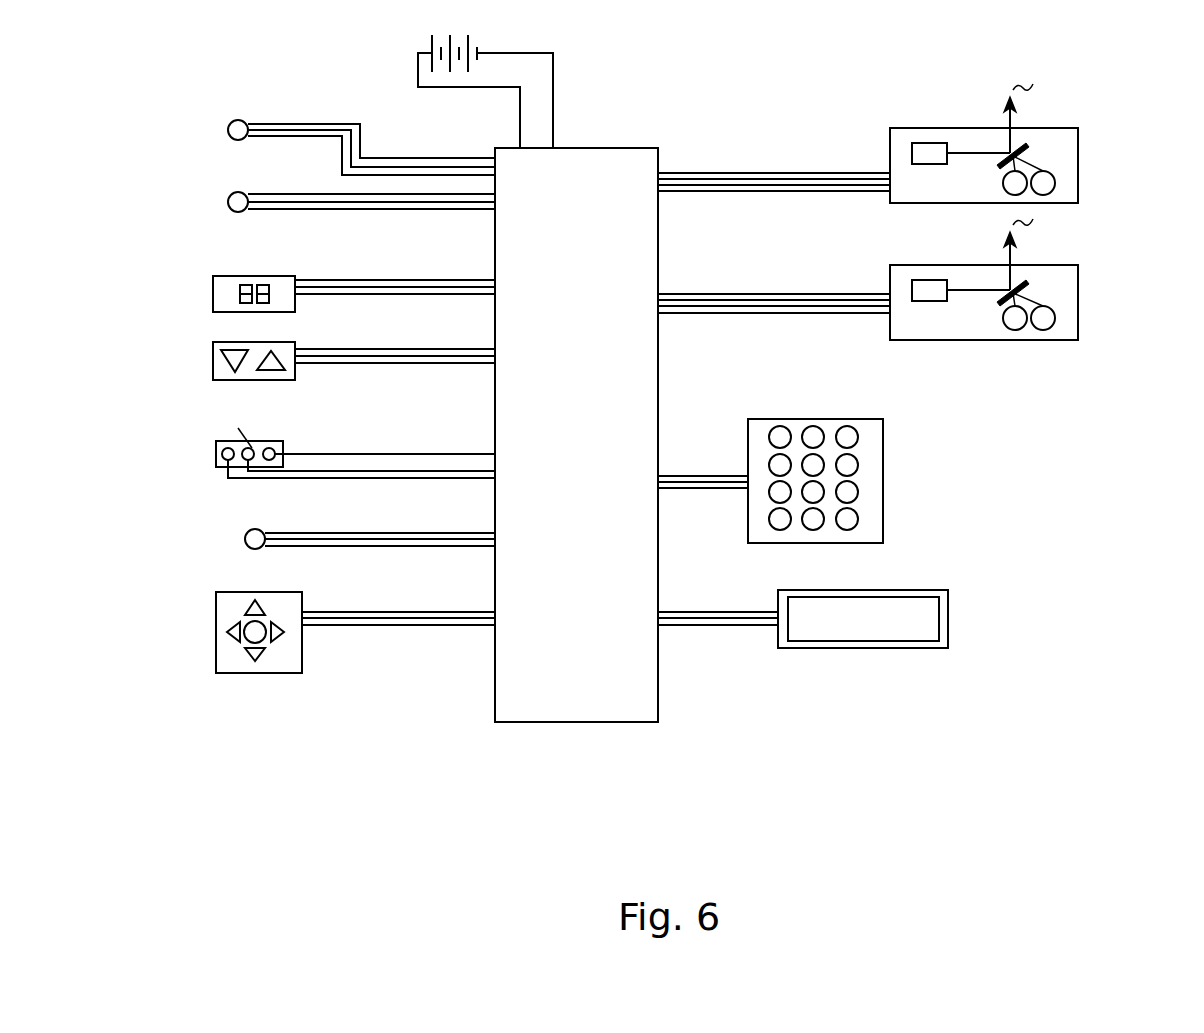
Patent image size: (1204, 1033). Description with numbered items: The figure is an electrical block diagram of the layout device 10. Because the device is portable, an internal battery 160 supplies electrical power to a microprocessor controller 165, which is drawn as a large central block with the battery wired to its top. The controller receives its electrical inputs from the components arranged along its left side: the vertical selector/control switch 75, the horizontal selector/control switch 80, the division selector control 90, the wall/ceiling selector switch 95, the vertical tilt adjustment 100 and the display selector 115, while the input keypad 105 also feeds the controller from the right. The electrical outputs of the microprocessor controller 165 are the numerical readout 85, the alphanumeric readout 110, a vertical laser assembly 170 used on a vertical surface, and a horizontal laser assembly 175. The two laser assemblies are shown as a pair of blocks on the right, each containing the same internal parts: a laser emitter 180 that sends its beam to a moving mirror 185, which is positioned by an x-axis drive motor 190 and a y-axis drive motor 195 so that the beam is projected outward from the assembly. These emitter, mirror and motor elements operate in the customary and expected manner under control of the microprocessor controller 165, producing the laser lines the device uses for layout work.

The layout device 10 is at (386, 745).
The vertical selector/control switch 75 is at (229, 125).
The horizontal selector/control switch 80 is at (229, 197).
The numerical readout 85 is at (223, 300).
The division selector control 90 is at (212, 363).
The wall/ceiling selector switch 95 is at (212, 448).
The vertical tilt adjustment 100 is at (244, 536).
The input keypad 105 is at (883, 448).
The alphanumeric readout 110 is at (933, 612).
The display selector 115 is at (215, 615).
The internal battery 160 is at (418, 43).
The microprocessor controller 165 is at (607, 148).
The vertical laser assembly 170 is at (1075, 155).
The horizontal laser assembly 175 is at (1080, 297).
The laser emitter 180 is at (927, 143).
The moving mirror 185 is at (1022, 148).
The x-axis drive motor 190 is at (1055, 187).
The y-axis drive motor 195 is at (1007, 192).